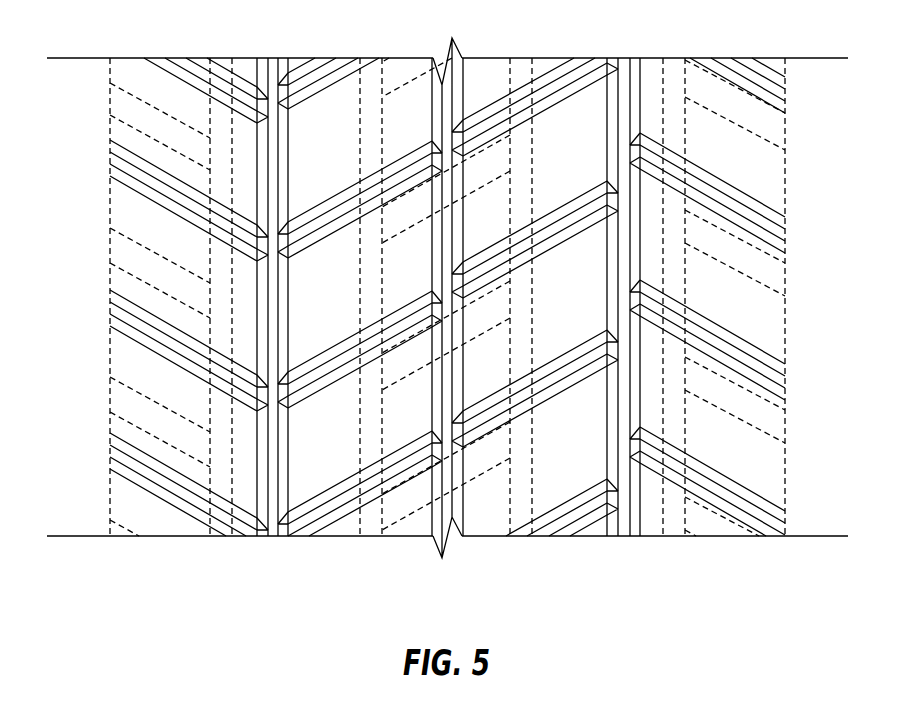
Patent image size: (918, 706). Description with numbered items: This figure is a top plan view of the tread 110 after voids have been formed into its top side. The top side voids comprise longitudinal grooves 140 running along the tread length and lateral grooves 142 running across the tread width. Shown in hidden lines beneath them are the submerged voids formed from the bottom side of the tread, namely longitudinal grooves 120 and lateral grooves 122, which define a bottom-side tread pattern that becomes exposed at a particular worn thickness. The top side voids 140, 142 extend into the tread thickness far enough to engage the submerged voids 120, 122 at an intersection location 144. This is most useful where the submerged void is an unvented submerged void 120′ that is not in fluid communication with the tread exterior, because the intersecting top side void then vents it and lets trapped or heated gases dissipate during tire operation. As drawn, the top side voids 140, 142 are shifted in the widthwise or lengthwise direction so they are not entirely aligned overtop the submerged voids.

The tread 110 is at (785, 192).
The longitudinal groove 120 is at (207, 108).
The unvented submerged void 120′ is at (419, 15).
The lateral groove 122 is at (123, 122).
The longitudinal groove 140 is at (272, 62).
The lateral groove 142 is at (120, 190).
The intersection location 144 is at (217, 73).